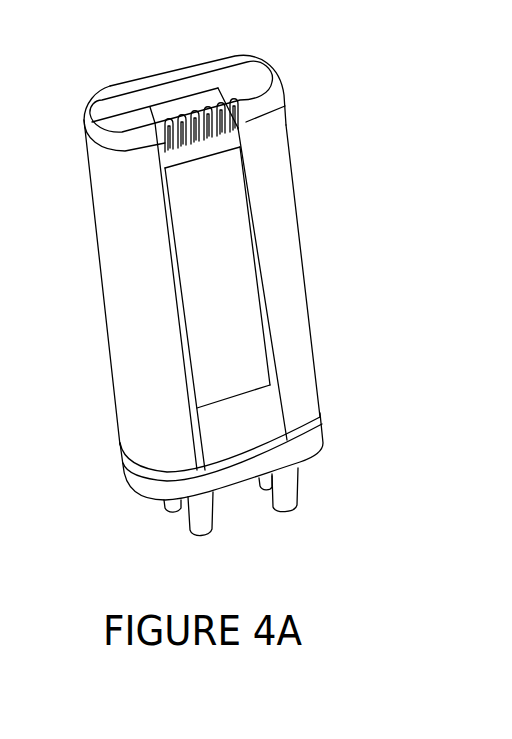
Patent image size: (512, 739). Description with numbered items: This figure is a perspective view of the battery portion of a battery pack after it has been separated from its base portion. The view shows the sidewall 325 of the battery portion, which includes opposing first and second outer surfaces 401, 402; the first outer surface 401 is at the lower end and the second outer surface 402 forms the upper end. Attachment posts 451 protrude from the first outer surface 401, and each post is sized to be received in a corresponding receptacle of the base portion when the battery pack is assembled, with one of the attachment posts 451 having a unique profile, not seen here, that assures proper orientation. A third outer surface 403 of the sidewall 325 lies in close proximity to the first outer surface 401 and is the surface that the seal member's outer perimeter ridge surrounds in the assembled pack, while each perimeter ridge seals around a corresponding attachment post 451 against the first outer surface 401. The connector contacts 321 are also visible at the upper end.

The first outer surface 401 is at (147, 497).
The second outer surface 402 is at (120, 100).
The connector contact pins 321 is at (242, 125).
The sidewall 325 is at (130, 276).
The third outer surface 403 is at (137, 480).
The attachment posts 451 is at (255, 500).